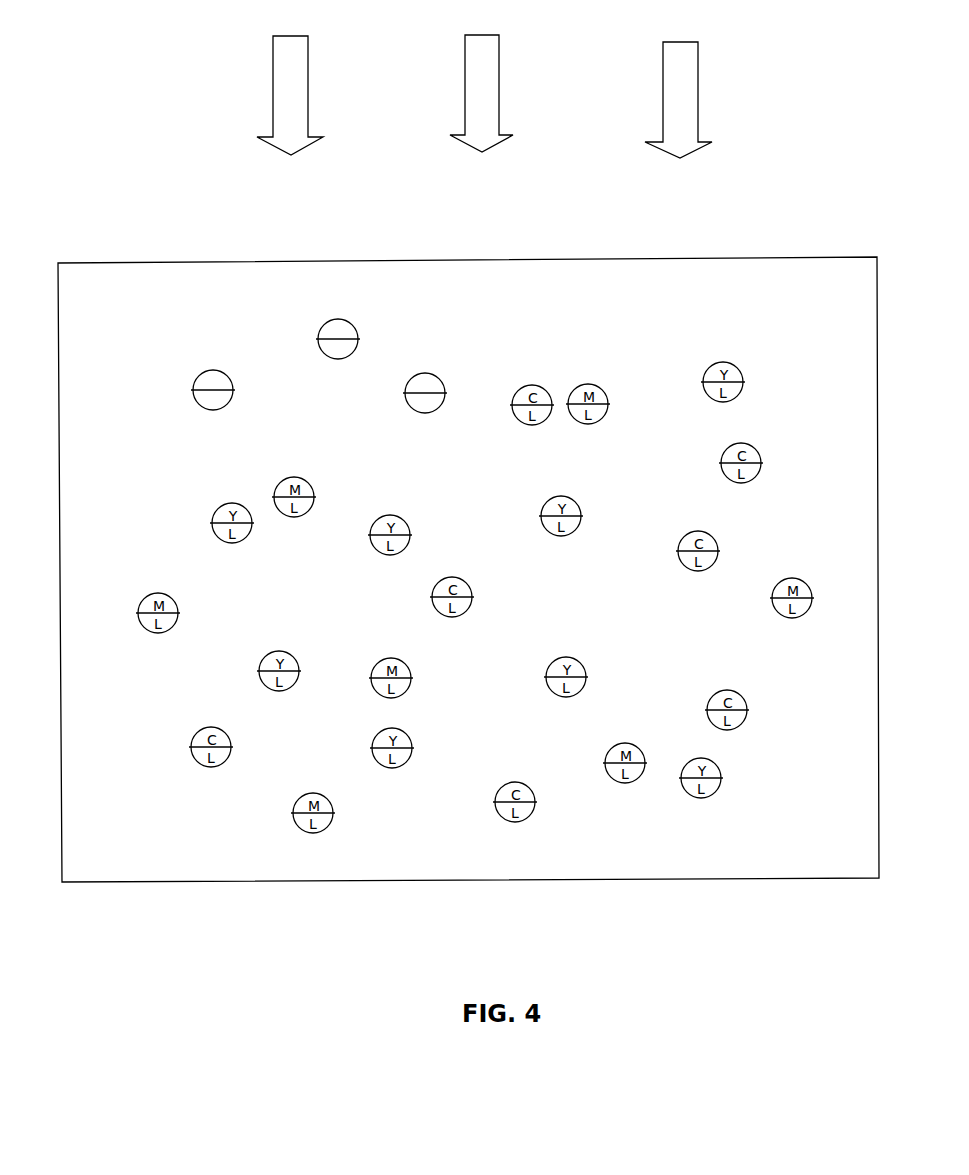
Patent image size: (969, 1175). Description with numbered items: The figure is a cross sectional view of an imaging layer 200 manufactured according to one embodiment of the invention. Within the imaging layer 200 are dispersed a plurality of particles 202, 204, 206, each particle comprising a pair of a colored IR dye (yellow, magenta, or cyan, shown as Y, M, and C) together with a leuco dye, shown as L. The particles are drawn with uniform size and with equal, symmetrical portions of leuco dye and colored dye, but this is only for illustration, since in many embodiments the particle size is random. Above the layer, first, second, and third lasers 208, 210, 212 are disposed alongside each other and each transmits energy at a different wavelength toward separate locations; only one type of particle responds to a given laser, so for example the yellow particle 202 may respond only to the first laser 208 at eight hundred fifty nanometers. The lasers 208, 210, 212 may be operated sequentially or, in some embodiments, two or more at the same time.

The imaging layer 200 is at (693, 283).
The yellow particle 202 is at (405, 393).
The magenta particle 204 is at (318, 340).
The cyan particle 206 is at (218, 370).
The first laser 208 is at (273, 83).
The second laser 210 is at (465, 82).
The third laser 212 is at (663, 88).